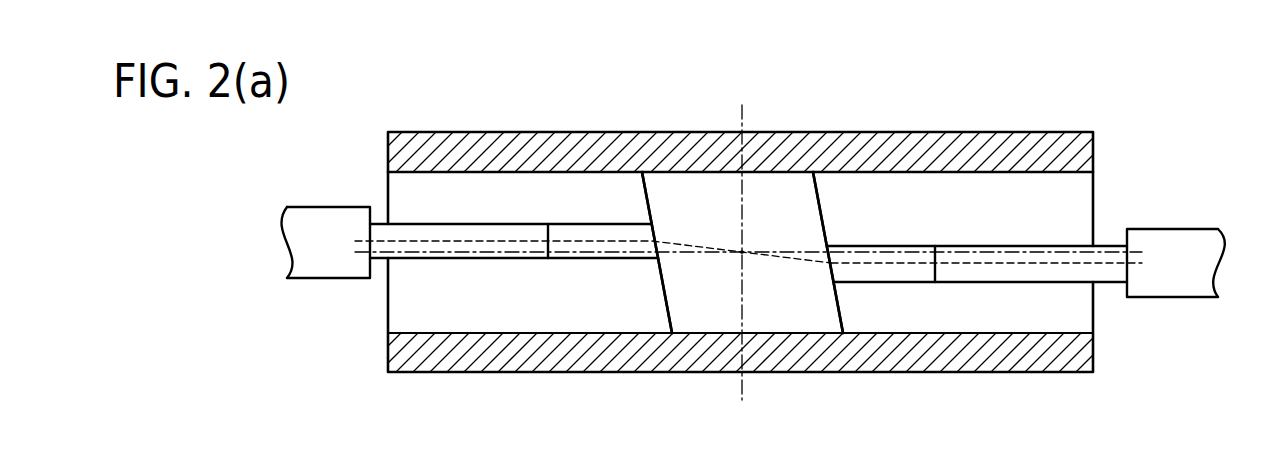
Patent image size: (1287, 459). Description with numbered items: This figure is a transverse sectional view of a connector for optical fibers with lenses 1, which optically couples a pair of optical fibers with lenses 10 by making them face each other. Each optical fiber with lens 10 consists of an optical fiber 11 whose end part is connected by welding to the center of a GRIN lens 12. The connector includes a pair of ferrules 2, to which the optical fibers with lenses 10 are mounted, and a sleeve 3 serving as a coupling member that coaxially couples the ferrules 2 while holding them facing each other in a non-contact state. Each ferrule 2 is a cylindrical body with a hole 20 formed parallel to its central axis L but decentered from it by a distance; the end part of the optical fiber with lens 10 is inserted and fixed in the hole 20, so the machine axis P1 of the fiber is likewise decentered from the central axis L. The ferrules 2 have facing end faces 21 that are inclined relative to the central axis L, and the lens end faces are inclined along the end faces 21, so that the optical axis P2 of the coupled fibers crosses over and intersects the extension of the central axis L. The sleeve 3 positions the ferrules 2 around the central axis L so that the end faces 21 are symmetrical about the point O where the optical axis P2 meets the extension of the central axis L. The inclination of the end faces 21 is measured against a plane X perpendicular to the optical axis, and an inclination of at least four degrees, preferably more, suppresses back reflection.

The connector for optical fibers with lenses 1 is at (1070, 78).
The ferrule 2 is at (961, 170).
The sleeve 3 is at (832, 147).
The optical fiber with lens 10 is at (753, 251).
The optical fiber 11 is at (450, 224).
The lens 12 is at (741, 251).
The hole 20 is at (632, 228).
The end face 21 is at (813, 195).
The central axis L is at (1015, 252).
The plane perpendicular to the optical axis X is at (738, 237).
The point O is at (734, 264).
The machine axis P1 is at (912, 263).
The optical axis P2 is at (692, 243).